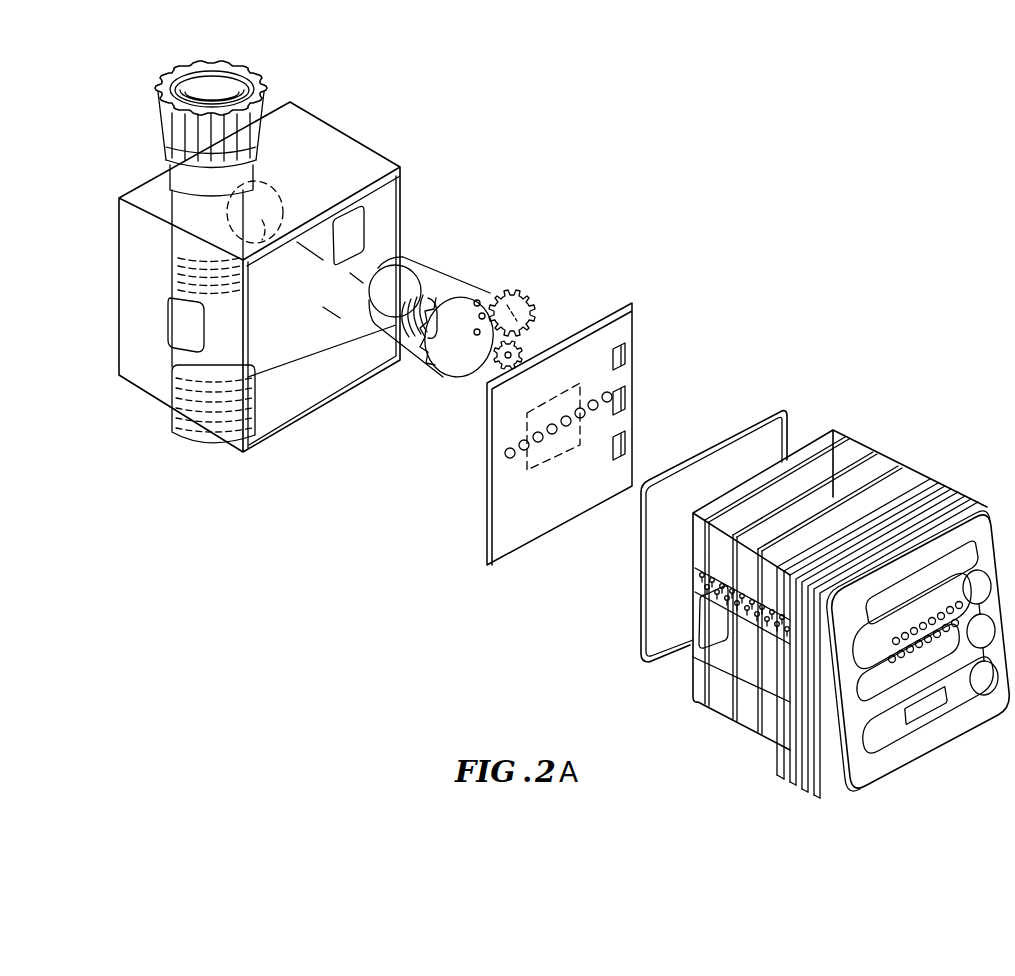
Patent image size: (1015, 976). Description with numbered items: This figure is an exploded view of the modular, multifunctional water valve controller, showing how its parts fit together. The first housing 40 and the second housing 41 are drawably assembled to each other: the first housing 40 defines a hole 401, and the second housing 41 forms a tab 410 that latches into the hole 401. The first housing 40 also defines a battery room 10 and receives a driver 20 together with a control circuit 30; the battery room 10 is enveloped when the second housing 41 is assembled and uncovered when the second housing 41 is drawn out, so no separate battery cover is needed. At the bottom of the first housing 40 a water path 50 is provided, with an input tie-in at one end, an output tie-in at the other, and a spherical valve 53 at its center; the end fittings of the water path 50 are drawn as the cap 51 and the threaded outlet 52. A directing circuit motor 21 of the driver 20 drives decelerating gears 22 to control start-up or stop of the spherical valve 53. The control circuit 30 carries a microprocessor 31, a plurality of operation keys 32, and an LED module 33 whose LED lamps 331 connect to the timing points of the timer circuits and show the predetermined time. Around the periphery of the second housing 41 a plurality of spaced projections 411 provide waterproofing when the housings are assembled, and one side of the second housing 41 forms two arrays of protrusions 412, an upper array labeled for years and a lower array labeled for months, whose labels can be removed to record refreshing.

The battery room 10 is at (297, 383).
The driver 20 is at (481, 256).
The directing circuit motor 21 is at (457, 277).
The decelerating gears 22 is at (528, 290).
The control circuit 30 is at (597, 503).
The microprocessor 31 is at (585, 420).
The operation keys 32 is at (627, 350).
The LED module 33 is at (537, 460).
The LED lamp 331 is at (607, 393).
The first housing 40 is at (119, 243).
The hole 401 is at (342, 223).
The second housing 41 is at (868, 453).
The tab 410 is at (712, 622).
The projections 411 is at (903, 463).
The arrays of protrusions 412 is at (700, 580).
The water path 50 is at (173, 275).
The cap 51 is at (200, 85).
The threaded outlet 52 is at (190, 450).
The spherical valve 53 is at (390, 275).